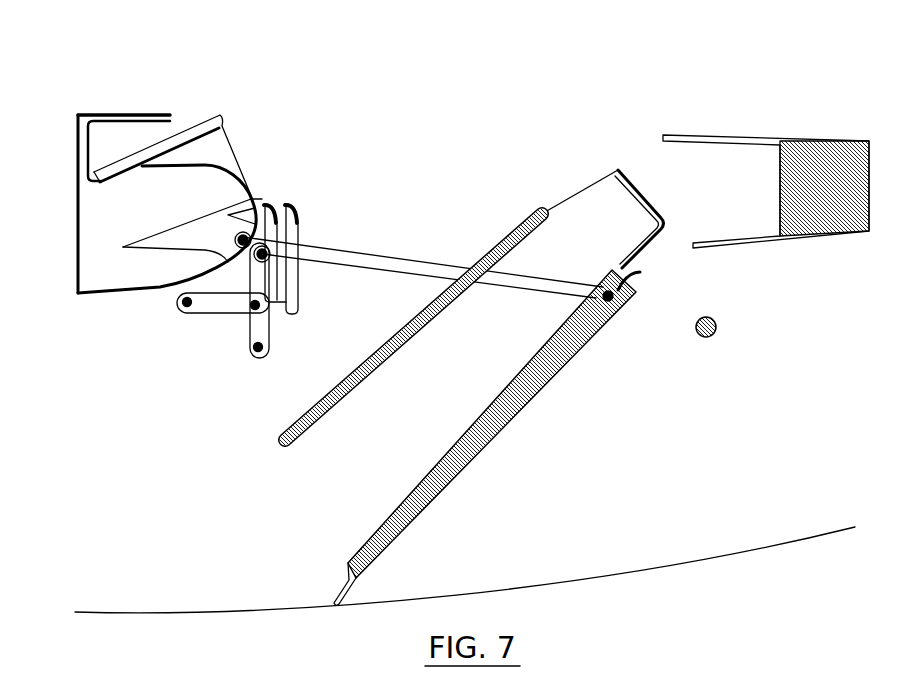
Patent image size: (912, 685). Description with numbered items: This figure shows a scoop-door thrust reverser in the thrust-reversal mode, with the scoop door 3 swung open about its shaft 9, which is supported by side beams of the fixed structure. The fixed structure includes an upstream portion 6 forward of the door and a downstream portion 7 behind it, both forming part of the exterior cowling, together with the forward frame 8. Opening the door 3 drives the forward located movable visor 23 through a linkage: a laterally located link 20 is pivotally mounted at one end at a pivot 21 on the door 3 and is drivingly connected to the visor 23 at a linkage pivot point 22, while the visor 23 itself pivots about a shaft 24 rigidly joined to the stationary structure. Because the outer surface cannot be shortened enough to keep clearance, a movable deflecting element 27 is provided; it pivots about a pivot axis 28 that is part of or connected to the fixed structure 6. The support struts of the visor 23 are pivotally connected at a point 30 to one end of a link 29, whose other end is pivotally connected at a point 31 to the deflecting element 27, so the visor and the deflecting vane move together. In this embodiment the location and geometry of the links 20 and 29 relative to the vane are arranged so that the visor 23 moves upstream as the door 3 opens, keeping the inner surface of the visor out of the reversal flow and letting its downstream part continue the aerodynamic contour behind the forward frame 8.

The scoop door 3 is at (563, 223).
The upstream portion of the fixed structure 6 is at (90, 93).
The downstream portion of the fixed structure 7 is at (795, 152).
The forward frame 8 is at (101, 220).
The shaft 9 is at (712, 337).
The link 20 is at (400, 267).
The pivot 21 is at (608, 299).
The linkage pivot point 22 is at (289, 238).
The visor 23 is at (115, 160).
The shaft 24 is at (258, 350).
The deflecting element 27 is at (288, 201).
The pivot axis 28 is at (186, 303).
The link 29 is at (252, 272).
The pivot point 30 is at (258, 305).
The pivot point 31 is at (270, 247).